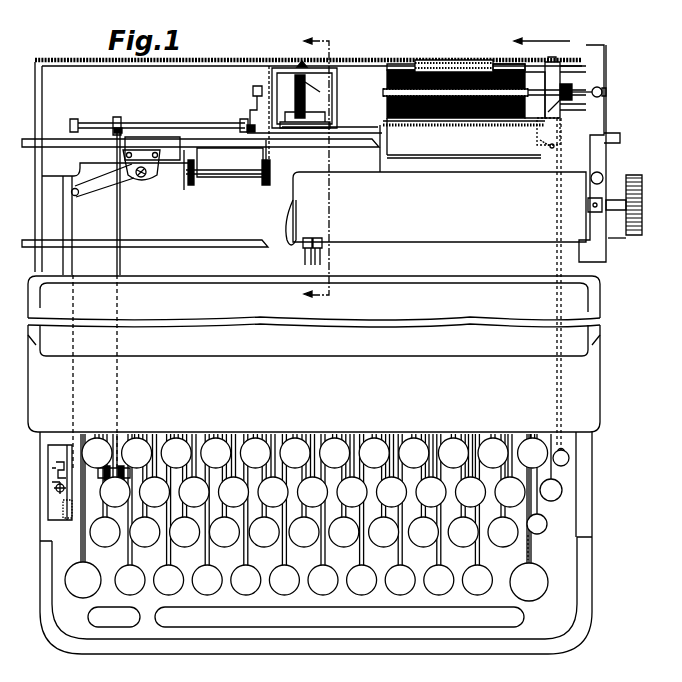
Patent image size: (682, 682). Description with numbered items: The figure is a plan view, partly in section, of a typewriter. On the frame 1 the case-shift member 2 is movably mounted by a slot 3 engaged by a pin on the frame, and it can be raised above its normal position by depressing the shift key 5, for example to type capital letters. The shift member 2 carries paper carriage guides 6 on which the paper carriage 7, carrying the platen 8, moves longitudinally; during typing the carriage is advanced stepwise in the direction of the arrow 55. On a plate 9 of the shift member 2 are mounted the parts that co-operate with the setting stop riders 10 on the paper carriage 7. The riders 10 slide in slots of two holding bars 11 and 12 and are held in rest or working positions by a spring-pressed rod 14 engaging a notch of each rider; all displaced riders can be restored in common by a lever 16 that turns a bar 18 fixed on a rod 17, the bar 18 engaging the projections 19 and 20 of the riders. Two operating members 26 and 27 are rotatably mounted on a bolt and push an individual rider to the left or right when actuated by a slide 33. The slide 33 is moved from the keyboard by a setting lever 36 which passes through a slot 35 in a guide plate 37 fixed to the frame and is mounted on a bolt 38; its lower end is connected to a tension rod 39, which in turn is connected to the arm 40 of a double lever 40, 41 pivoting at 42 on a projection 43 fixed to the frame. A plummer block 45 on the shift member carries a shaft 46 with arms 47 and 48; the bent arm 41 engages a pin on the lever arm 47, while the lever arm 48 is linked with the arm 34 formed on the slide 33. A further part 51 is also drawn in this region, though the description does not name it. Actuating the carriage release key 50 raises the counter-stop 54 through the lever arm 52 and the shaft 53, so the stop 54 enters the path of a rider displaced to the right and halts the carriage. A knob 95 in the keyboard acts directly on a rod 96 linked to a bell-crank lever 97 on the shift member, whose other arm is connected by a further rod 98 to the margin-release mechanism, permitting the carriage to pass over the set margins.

The frame 1 is at (38, 105).
The case-shift member 2 is at (355, 147).
The slot 3 is at (308, 170).
The shift key 5 is at (535, 590).
The paper carriage guides 6 is at (614, 243).
The paper carriage 7 is at (605, 128).
The platen 8 is at (472, 240).
The plate 9 is at (356, 128).
The setting stop riders 10 is at (445, 70).
The holding bar 11 is at (462, 122).
The holding bar 12 is at (430, 64).
The rod 14 is at (477, 64).
The lever 16 is at (603, 92).
The rod 17 is at (559, 98).
The bar 18 is at (548, 88).
The projection 19 is at (535, 95).
The projection 20 is at (520, 60).
The operating member 26 is at (300, 72).
The operating member 27 is at (318, 100).
The slide 33 is at (272, 82).
The arm 34 is at (272, 158).
The slot 35 is at (54, 478).
The setting lever 36 is at (62, 496).
The guide plate 37 is at (58, 467).
The bolt 38 is at (54, 488).
The tension rod 39 is at (78, 195).
The arm 40 is at (105, 182).
The arm 41 is at (186, 182).
The pivot 42 is at (141, 180).
The projection 43 is at (142, 160).
The plummer block 45 is at (230, 162).
The shaft 46 is at (230, 178).
The lever arm 47 is at (194, 180).
The lever arm 48 is at (266, 184).
The carriage release key 50 is at (136, 622).
The key lever rod 51 is at (121, 214).
The lever arm 52 is at (249, 122).
The shaft 53 is at (258, 94).
The counter-stop 54 is at (318, 86).
The arrow 55 is at (548, 41).
The knob 95 is at (568, 452).
The rod 96 is at (558, 204).
The bell-crank lever 97 is at (537, 141).
The rod 98 is at (530, 125).